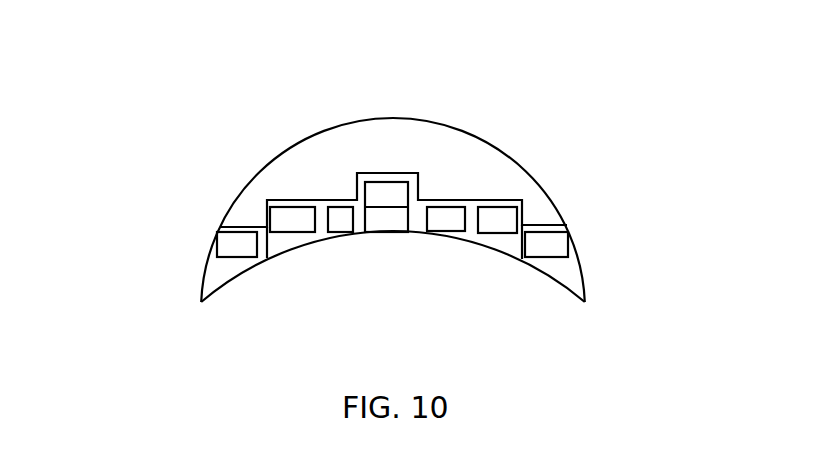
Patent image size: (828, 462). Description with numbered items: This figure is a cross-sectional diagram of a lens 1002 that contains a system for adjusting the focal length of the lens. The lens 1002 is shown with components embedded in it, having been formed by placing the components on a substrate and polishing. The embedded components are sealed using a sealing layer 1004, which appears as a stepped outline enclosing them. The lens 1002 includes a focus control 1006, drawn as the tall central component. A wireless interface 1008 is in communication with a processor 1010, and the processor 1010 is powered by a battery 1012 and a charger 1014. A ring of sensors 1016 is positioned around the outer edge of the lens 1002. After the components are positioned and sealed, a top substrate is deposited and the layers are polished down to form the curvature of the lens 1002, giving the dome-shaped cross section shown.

The lens 1002 is at (580, 280).
The sealing layer 1004 is at (521, 200).
The focus control 1006 is at (385, 185).
The wireless interface 1008 is at (498, 240).
The processor 1010 is at (445, 230).
The battery 1012 is at (284, 222).
The charger 1014 is at (338, 235).
The ring of sensors 1016 is at (223, 243).